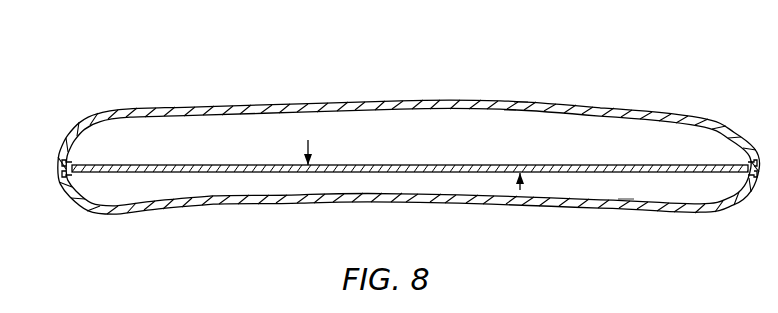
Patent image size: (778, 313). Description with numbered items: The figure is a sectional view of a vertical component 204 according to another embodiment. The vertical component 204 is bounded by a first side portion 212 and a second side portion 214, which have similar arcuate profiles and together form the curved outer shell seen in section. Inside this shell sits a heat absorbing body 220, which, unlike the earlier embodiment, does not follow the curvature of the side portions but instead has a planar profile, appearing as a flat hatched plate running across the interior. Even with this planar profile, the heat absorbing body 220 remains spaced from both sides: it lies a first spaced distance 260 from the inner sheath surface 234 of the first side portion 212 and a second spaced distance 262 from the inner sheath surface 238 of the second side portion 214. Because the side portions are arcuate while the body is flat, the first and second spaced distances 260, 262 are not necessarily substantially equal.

The vertical component 204 is at (394, 150).
The first side portion 212 is at (588, 202).
The second side portion 214 is at (270, 106).
The heat absorbing body 220 is at (200, 176).
The inner sheath surface 234 is at (626, 196).
The inner sheath surface 238 is at (510, 113).
The first spaced distance 260 is at (308, 198).
The second spaced distance 262 is at (521, 103).